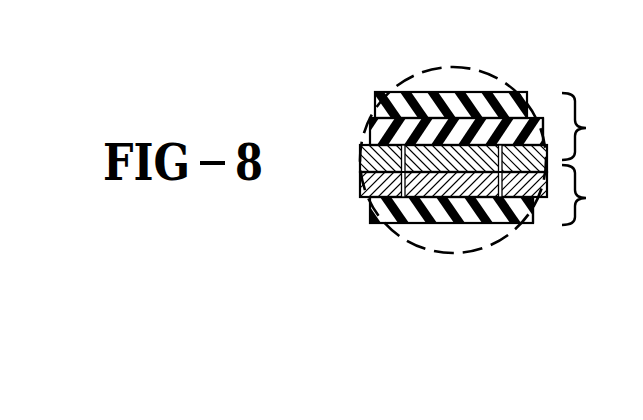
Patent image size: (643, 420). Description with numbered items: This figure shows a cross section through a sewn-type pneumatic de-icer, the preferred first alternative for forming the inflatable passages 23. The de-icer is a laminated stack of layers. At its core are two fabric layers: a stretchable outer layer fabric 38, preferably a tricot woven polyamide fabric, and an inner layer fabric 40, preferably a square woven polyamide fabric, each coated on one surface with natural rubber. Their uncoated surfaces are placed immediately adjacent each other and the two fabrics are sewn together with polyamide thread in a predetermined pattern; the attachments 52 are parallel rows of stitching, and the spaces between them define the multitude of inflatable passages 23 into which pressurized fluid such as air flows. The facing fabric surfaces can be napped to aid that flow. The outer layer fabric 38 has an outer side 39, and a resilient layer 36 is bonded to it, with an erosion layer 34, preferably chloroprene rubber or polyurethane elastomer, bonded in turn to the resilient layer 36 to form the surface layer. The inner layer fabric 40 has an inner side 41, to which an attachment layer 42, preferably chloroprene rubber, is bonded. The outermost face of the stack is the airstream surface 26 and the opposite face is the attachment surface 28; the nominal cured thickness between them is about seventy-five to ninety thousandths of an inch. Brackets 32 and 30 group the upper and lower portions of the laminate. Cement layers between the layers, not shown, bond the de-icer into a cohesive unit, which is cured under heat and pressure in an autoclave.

The inflatable passages 23 is at (438, 173).
The airstream surface 26 is at (495, 110).
The attachment surface 28 is at (475, 223).
The lower laminate assembly 30 is at (591, 195).
The upper laminate assembly 32 is at (591, 126).
The erosion layer 34 is at (380, 108).
The resilient layer 36 is at (382, 134).
The outer layer fabric 38 is at (422, 158).
The outer side 39 is at (508, 147).
The inner layer fabric 40 is at (375, 183).
The inner side 41 is at (520, 200).
The attachment layer 42 is at (443, 212).
The attachments 52 is at (398, 168).